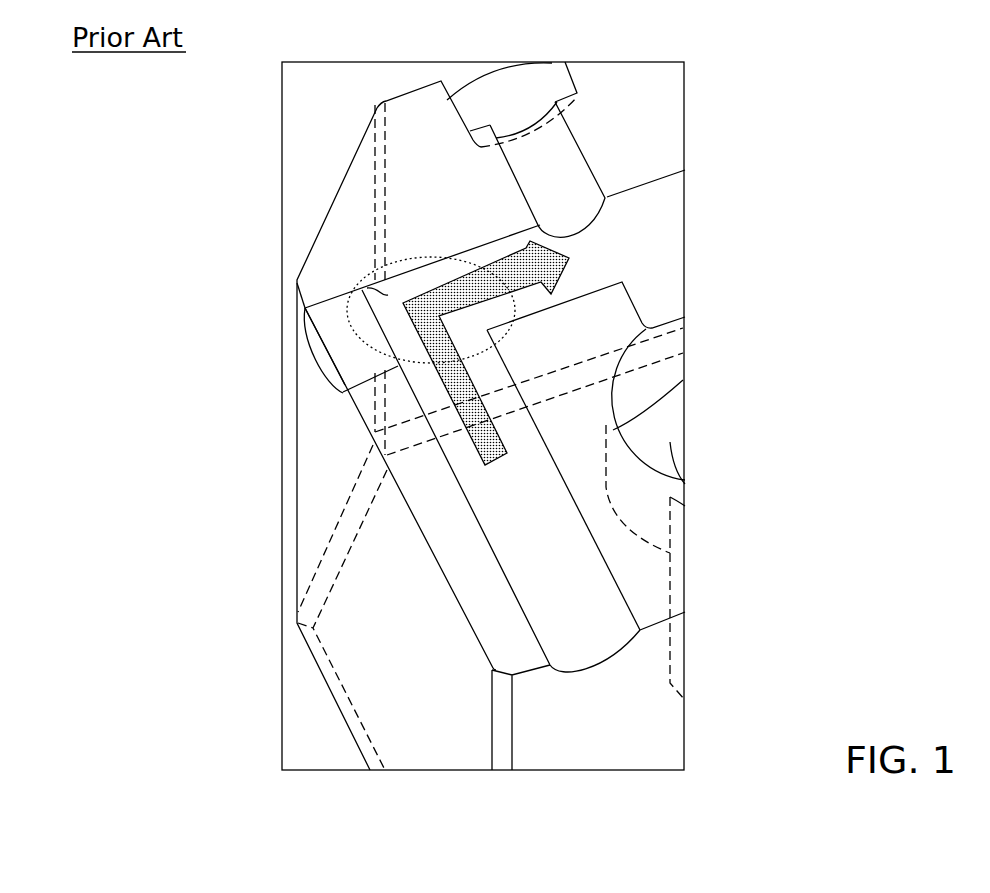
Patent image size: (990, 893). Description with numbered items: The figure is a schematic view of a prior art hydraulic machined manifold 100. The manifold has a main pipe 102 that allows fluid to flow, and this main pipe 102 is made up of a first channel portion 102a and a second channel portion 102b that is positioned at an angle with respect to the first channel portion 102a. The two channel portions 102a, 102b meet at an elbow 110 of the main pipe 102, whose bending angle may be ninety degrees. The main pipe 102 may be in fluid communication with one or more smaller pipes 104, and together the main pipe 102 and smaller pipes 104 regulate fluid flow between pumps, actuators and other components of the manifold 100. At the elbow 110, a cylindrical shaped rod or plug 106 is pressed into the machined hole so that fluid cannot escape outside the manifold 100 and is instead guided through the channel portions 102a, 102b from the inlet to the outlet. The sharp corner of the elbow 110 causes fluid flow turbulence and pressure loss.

The hydraulic machined manifold 100 is at (717, 45).
The main pipe 102 is at (549, 463).
The first channel portion 102a is at (562, 640).
The second channel portion 102b is at (619, 258).
The smaller pipes 104 is at (512, 108).
The plug 106 is at (325, 353).
The elbow 110 is at (430, 244).